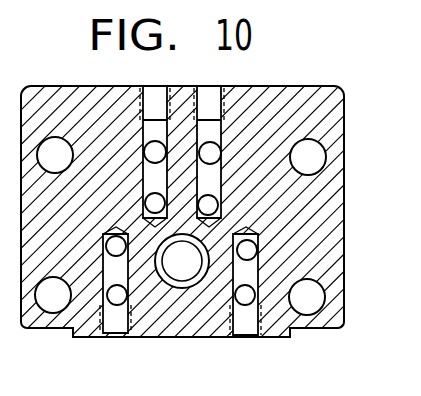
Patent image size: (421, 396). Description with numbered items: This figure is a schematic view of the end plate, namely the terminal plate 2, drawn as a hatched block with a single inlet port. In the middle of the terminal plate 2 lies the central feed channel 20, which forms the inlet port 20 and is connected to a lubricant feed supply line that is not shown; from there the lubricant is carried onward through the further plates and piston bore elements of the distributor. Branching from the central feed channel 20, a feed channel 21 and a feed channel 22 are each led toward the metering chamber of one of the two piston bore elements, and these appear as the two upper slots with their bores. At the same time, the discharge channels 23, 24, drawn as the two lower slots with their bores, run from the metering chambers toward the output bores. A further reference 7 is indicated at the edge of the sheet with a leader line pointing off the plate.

The terminal plate 2 is at (343, 312).
The central feed channel 20 is at (183, 273).
The feed channel 21 is at (147, 203).
The feed channel 22 is at (207, 202).
The discharge channel 23 is at (115, 345).
The discharge channel 24 is at (248, 345).
The adjacent component 7 is at (420, 352).